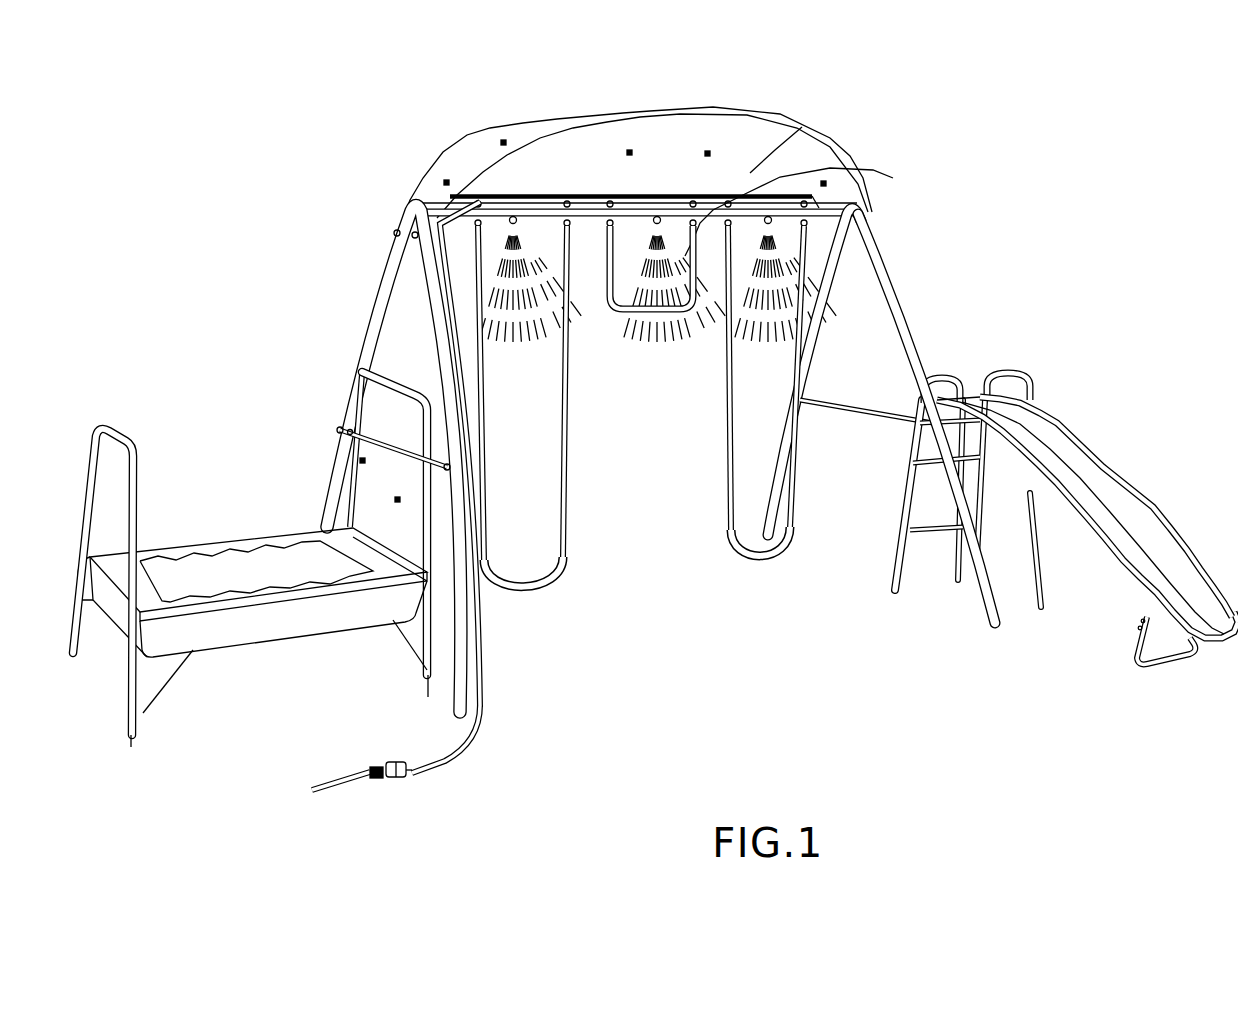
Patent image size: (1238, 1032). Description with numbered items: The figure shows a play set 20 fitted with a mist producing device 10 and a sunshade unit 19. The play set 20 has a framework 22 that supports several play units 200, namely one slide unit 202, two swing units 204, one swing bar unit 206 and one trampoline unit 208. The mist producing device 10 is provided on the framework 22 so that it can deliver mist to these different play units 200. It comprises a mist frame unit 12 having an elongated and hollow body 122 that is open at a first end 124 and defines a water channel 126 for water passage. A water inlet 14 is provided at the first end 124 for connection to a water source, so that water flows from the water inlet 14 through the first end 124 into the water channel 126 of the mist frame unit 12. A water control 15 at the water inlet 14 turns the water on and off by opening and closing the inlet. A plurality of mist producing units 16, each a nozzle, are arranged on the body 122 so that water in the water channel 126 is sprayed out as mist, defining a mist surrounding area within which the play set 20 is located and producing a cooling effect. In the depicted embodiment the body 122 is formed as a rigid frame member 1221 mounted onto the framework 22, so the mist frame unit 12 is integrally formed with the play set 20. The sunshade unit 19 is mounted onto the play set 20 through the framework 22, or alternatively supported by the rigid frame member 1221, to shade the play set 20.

The mist producing device 10 is at (407, 787).
The mist frame unit 12 is at (477, 665).
The water inlet 14 is at (397, 763).
The water control 15 is at (398, 759).
The mist producing unit 16 is at (513, 216).
The sunshade unit 19 is at (760, 133).
The play set 20 is at (1052, 353).
The framework 22 is at (398, 217).
The elongated and hollow body 122 is at (477, 598).
The first end 124 is at (390, 780).
The water channel 126 is at (385, 764).
The play unit 200 is at (1087, 450).
The slide unit 202 is at (1134, 513).
The swing unit 204 is at (808, 390).
The swing bar unit 206 is at (893, 178).
The trampoline unit 208 is at (332, 620).
The rigid frame member 1221 is at (674, 212).